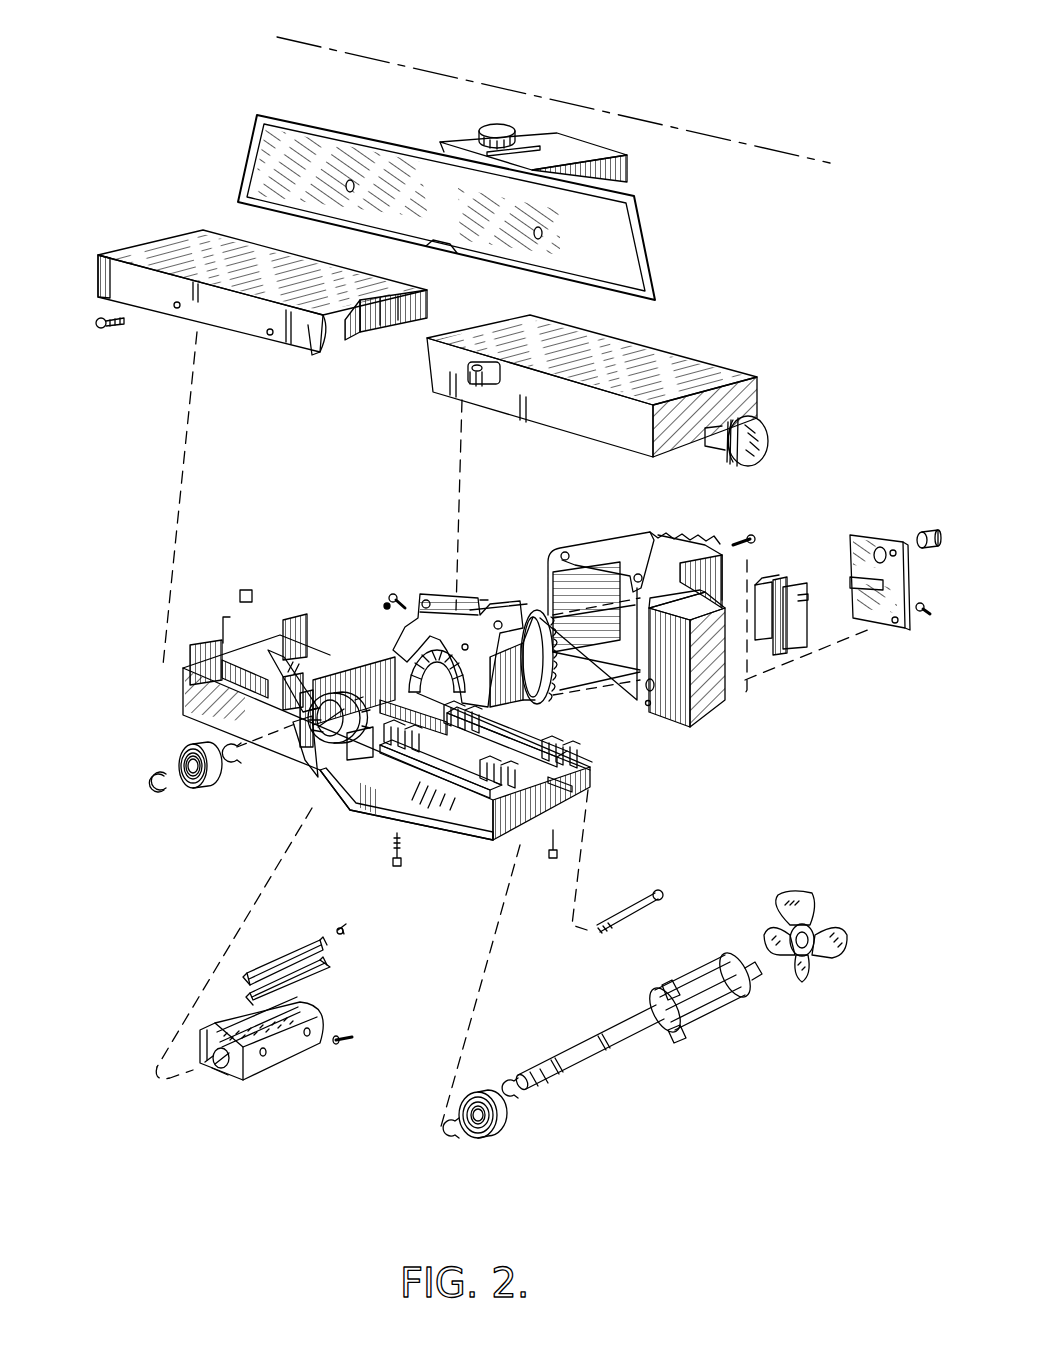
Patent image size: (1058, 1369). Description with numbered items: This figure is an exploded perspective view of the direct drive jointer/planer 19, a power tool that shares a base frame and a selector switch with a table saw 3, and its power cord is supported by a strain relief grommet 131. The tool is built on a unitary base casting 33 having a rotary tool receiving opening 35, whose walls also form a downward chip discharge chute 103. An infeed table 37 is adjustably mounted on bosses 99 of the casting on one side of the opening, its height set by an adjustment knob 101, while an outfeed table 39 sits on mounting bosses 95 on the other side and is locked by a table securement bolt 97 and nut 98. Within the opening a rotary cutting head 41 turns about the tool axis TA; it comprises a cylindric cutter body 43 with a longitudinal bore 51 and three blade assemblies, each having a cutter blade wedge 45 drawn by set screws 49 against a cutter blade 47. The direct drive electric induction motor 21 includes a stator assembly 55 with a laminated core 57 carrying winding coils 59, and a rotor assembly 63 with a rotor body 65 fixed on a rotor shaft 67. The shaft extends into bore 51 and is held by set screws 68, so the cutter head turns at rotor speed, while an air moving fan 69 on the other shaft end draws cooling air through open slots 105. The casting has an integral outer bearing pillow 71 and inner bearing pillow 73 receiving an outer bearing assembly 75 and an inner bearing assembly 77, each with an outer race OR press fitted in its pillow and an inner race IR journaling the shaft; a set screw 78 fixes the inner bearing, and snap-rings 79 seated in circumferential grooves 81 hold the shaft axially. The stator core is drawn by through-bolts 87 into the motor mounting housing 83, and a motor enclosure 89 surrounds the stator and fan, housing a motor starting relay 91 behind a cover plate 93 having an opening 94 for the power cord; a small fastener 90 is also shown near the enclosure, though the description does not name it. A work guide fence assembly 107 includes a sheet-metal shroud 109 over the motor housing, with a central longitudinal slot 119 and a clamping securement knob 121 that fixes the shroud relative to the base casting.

The table saw 3 is at (327, 22).
The jointer/planer 19 is at (800, 298).
The direct drive electric induction motor 21 is at (490, 570).
The unitary base casting 33 is at (484, 840).
The rotary tool receiving opening 35 is at (327, 690).
The infeed table 37 is at (657, 341).
The outfeed table 39 is at (170, 234).
The rotary cutting head 41 is at (249, 1088).
The cutter body 43 is at (282, 1062).
The cutter blade wedge 45 is at (322, 962).
The cutter blade 47 is at (280, 958).
The set screws 49 is at (345, 928).
The longitudinal bore 51 is at (216, 1078).
The stator assembly 55 is at (555, 684).
The core 57 is at (562, 692).
The winding coils 59 is at (508, 612).
The rotor assembly 63 is at (638, 1036).
The rotor body 65 is at (716, 1020).
The rotor shaft 67 is at (606, 1056).
The set screws 68 is at (348, 1046).
The air moving fan 69 is at (843, 931).
The outer bearing pillow 71 is at (293, 722).
The inner bearing pillow 73 is at (415, 668).
The outer rolling element bearing assembly 75 is at (192, 789).
The inner rolling element bearing assembly 77 is at (496, 1128).
The set screw 78 is at (390, 598).
The snap-rings 79 is at (240, 757).
The circumferential grooves 81 is at (622, 1030).
The motor mounting housing 83 is at (440, 603).
The through-bolts 87 is at (634, 907).
The motor enclosure 89 is at (712, 712).
The screw 90 is at (751, 534).
The motor starting relay 91 is at (800, 645).
The cover plate 93 is at (905, 630).
The opening 94 is at (884, 547).
The mounting bosses 95 is at (205, 650).
The table securement bolt 97 is at (104, 332).
The nut 98 is at (248, 590).
The bosses 99 is at (596, 764).
The adjustment knob 101 is at (771, 431).
The chip discharge chute 103 is at (350, 805).
The open slots 105 is at (715, 520).
The work guide fence assembly 107 is at (660, 245).
The shroud 109 is at (630, 176).
The central longitudinal slot 119 is at (540, 146).
The clamping securement knob 121 is at (497, 124).
The strain relief grommets 131 is at (930, 533).
The inner race IR is at (190, 762).
The outer race OR is at (215, 780).
The tool axis TA is at (156, 781).